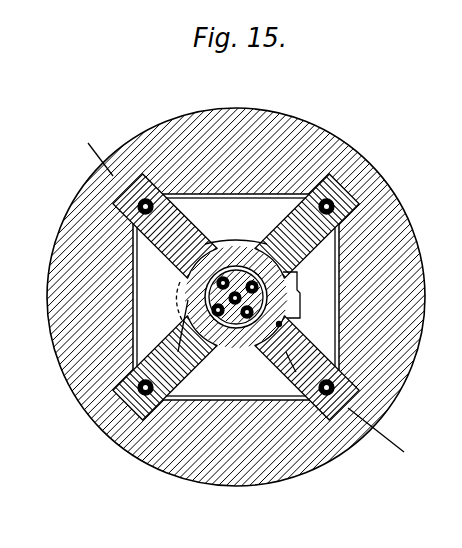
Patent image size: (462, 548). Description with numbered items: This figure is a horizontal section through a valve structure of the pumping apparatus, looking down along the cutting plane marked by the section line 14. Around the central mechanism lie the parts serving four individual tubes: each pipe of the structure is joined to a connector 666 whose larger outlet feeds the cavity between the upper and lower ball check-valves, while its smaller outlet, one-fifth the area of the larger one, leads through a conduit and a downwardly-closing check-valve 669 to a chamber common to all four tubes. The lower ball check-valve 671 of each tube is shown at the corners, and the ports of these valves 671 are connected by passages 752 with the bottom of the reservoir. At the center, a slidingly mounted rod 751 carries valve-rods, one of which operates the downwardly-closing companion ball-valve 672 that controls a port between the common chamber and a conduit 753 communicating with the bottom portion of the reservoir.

The section line 14 is at (236, 304).
The connector 666 is at (275, 234).
The downwardly-closing check-valve 669 is at (290, 300).
The lower ball check-valve 671 is at (146, 198).
The companion ball-valve 672 is at (235, 330).
The slidingly mounted rod 751 is at (282, 324).
The passages 752 is at (181, 305).
The conduit 753 is at (196, 262).